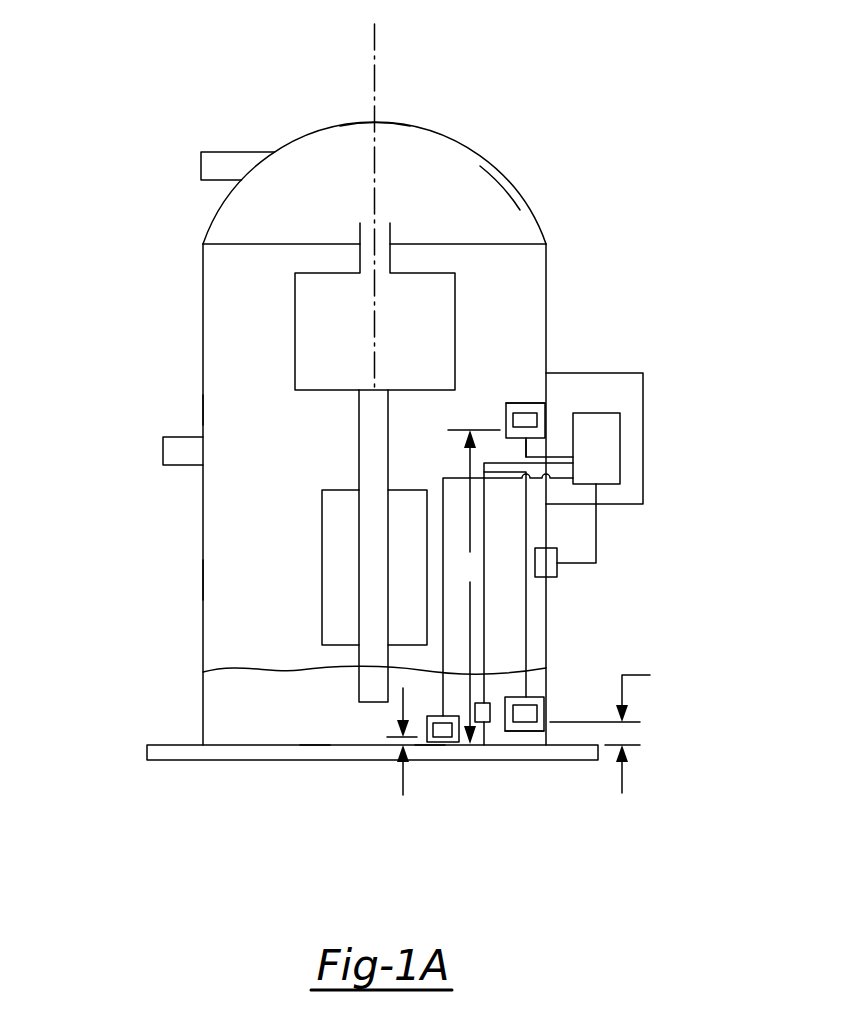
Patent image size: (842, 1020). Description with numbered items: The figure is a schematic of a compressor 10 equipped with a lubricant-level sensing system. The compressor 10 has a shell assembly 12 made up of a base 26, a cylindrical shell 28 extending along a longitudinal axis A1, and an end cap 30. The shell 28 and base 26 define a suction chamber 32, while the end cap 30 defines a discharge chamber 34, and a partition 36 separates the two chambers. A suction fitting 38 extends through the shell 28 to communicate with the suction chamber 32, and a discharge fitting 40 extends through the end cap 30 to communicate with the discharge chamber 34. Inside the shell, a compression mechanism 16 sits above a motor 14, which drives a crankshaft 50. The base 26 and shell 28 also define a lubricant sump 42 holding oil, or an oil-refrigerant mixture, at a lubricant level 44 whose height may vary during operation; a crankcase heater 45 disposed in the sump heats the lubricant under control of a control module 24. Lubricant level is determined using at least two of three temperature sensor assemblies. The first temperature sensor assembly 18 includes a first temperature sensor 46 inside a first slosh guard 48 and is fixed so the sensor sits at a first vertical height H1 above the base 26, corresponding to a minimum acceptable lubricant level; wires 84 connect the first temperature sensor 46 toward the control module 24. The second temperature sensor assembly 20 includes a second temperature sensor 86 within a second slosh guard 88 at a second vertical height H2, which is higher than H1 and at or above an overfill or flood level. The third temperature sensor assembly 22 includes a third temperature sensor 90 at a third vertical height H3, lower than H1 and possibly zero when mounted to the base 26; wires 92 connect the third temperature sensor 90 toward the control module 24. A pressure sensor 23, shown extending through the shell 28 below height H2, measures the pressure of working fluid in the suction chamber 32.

The compressor 10 is at (552, 97).
The shell assembly 12 is at (200, 534).
The motor 14 is at (322, 522).
The compression mechanism 16 is at (295, 336).
The first temperature sensor assembly 18 is at (524, 741).
The second temperature sensor assembly 20 is at (504, 396).
The third temperature sensor assembly 22 is at (428, 753).
The pressure sensor 23 is at (557, 571).
The control module 24 is at (615, 431).
The base 26 is at (167, 760).
The cylindrical shell 28 is at (203, 575).
The end cap 30 is at (416, 128).
The suction chamber 32 is at (237, 409).
The discharge chamber 34 is at (493, 203).
The partition 36 is at (278, 244).
The suction fitting 38 is at (163, 452).
The discharge fitting 40 is at (212, 152).
The lubricant sump 42 is at (313, 750).
The lubricant level 44 is at (263, 668).
The crankcase heater 45 is at (483, 743).
The first temperature sensor 46 is at (544, 713).
The first slosh guard 48 is at (532, 697).
The crankshaft 50 is at (359, 450).
The wires 84 is at (527, 520).
The second temperature sensor 86 is at (537, 420).
The second slosh guard 88 is at (527, 403).
The third temperature sensor 90 is at (442, 740).
The wires 92 is at (443, 478).
The longitudinal axis A1 is at (374, 58).
The first vertical height H1 is at (616, 728).
The second vertical height H2 is at (474, 587).
The third vertical height H3 is at (403, 795).